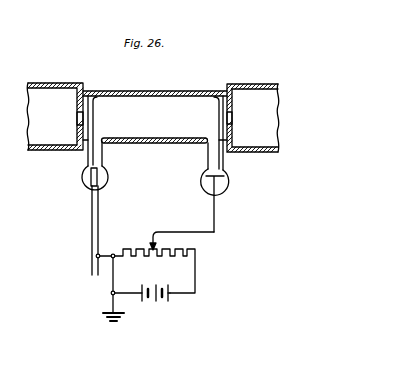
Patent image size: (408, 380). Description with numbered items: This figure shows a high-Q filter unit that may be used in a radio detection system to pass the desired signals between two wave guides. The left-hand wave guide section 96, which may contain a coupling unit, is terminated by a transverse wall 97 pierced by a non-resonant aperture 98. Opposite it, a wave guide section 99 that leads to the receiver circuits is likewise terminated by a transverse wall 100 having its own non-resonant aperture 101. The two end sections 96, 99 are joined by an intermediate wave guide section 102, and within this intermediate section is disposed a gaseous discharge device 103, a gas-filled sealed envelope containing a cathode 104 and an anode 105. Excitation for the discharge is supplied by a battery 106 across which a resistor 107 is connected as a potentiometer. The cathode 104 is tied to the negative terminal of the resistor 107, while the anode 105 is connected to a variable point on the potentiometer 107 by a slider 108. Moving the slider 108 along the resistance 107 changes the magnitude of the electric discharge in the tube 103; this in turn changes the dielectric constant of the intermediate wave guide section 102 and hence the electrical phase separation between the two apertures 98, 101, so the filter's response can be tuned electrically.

The left-hand wave guide section 96 is at (56, 83).
The transverse wall 97 is at (76, 133).
The non-resonant aperture 98 is at (77, 118).
The wave guide section 99 is at (256, 84).
The transverse wall 100 is at (237, 143).
The non-resonant aperture 101 is at (235, 119).
The intermediate wave guide section 102 is at (128, 91).
The gaseous discharge device 103 is at (165, 124).
The cathode 104 is at (100, 172).
The anode 105 is at (206, 176).
The battery 106 is at (155, 307).
The resistor 107 is at (182, 250).
The slider 108 is at (151, 246).